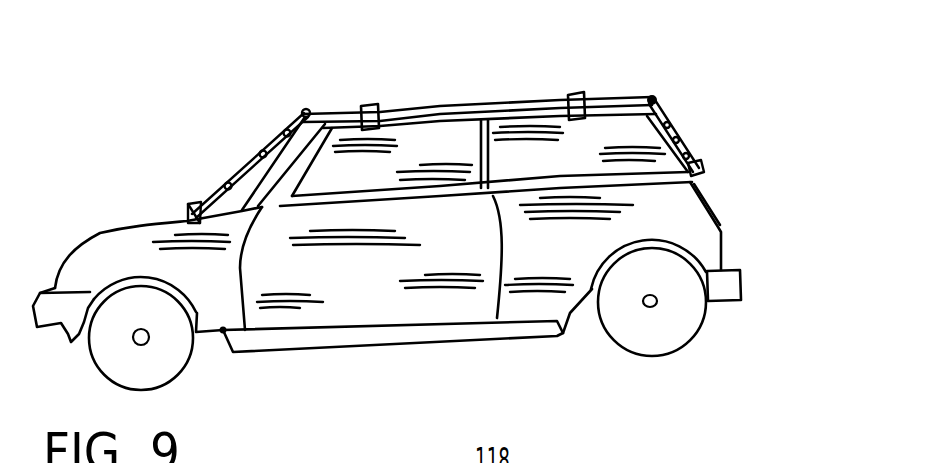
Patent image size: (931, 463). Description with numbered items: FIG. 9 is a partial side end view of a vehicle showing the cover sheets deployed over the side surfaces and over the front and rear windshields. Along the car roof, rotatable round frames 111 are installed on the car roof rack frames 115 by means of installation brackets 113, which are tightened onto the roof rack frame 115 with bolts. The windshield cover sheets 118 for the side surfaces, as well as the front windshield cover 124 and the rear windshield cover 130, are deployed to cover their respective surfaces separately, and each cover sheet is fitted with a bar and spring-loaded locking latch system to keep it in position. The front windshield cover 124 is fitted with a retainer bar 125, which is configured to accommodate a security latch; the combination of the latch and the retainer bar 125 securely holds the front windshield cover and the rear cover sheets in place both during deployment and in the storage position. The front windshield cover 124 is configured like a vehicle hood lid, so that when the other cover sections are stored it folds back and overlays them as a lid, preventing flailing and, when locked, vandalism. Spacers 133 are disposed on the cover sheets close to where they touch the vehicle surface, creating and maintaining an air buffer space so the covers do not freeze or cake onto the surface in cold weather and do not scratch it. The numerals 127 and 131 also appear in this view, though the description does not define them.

The rotatable round frame 111 is at (657, 98).
The installation bracket 113 is at (368, 106).
The car roof rack frame 115 is at (455, 118).
The windshield cover sheet 118 is at (595, 135).
The front windshield cover 124 is at (260, 153).
The retainer bar 125 is at (187, 208).
The rail segment 127 is at (423, 451).
The rear windshield cover 130 is at (682, 133).
The rail segment 131 is at (571, 451).
The spacer 133 is at (697, 155).